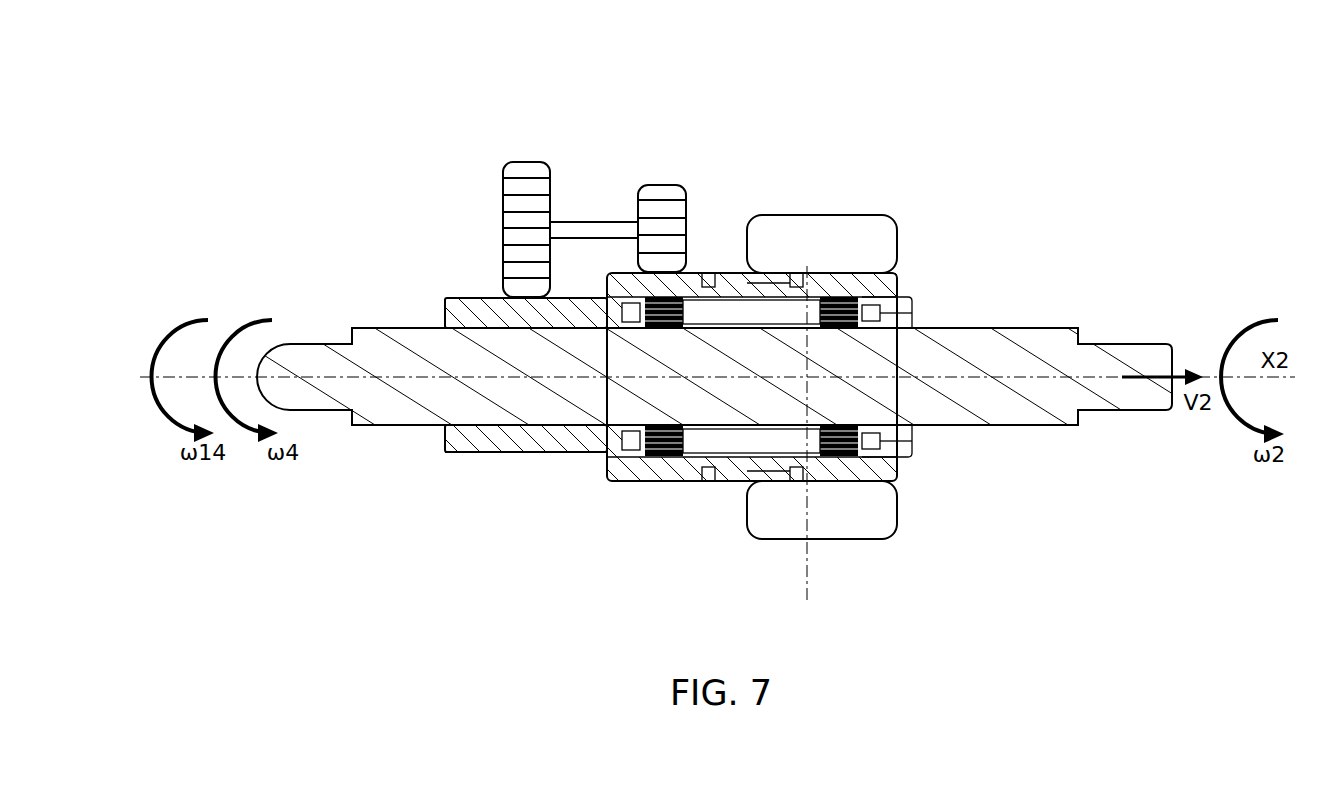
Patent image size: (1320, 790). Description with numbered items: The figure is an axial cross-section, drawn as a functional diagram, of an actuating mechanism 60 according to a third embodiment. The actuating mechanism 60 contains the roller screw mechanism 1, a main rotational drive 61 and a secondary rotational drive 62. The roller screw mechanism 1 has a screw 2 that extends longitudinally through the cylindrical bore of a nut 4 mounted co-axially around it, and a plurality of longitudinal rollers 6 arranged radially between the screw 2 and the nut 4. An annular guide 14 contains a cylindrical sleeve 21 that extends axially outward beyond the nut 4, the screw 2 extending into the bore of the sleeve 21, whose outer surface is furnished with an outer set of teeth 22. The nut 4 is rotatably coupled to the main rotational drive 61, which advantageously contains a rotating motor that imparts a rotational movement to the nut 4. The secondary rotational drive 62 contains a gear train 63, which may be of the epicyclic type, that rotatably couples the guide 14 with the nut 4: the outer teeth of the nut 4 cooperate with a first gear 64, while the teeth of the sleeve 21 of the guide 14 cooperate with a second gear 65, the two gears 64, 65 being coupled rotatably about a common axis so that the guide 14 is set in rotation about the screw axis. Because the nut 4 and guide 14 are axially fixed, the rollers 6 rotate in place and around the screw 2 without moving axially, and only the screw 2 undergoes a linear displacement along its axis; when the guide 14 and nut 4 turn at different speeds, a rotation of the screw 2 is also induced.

The roller screw mechanism 1 is at (908, 290).
The screw 2 is at (1090, 410).
The nut 4 is at (830, 445).
The longitudinal rollers 6 is at (777, 440).
The annular guide 14 is at (433, 320).
The cylindrical sleeve 21 is at (565, 448).
The outer set of teeth 22 is at (458, 458).
The actuating mechanism 60 is at (448, 212).
The main rotational drive 61 is at (785, 243).
The secondary rotational drive 62 is at (495, 152).
The gear train 63 is at (512, 78).
The first gear 64 is at (653, 190).
The second gear 65 is at (528, 170).